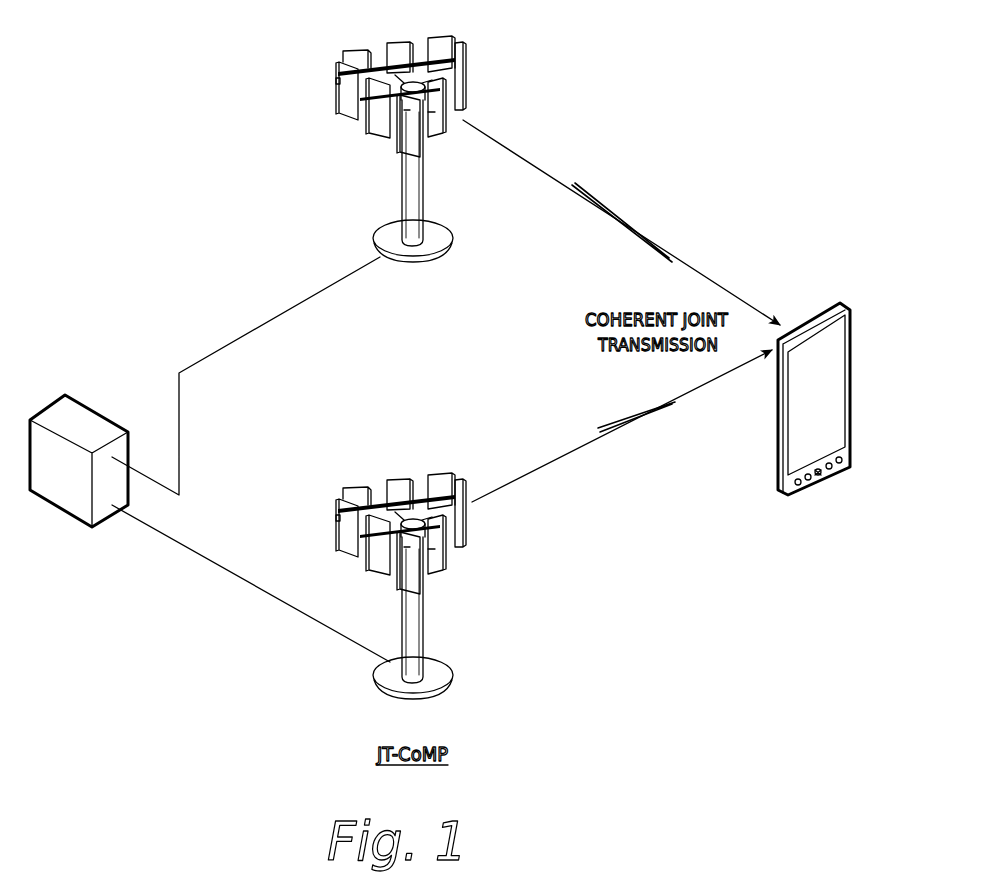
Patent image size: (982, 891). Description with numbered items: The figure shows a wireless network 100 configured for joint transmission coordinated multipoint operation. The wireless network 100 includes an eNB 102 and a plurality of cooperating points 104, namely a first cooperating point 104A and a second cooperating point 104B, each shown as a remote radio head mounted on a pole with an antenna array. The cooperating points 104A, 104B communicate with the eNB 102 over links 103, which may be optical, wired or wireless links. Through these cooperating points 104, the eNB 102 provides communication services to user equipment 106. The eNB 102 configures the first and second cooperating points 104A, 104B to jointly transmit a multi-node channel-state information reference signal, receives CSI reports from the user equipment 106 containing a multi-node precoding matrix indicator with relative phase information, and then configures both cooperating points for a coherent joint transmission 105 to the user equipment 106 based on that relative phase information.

The wireless network 100 is at (692, 612).
The eNB 102 is at (80, 417).
The links 103 is at (275, 315).
The cooperating points 104 is at (398, 50).
The first cooperating point 104A is at (412, 188).
The second cooperating point 104B is at (415, 614).
The coherent joint transmission 105 is at (645, 228).
The user equipment 106 is at (822, 474).